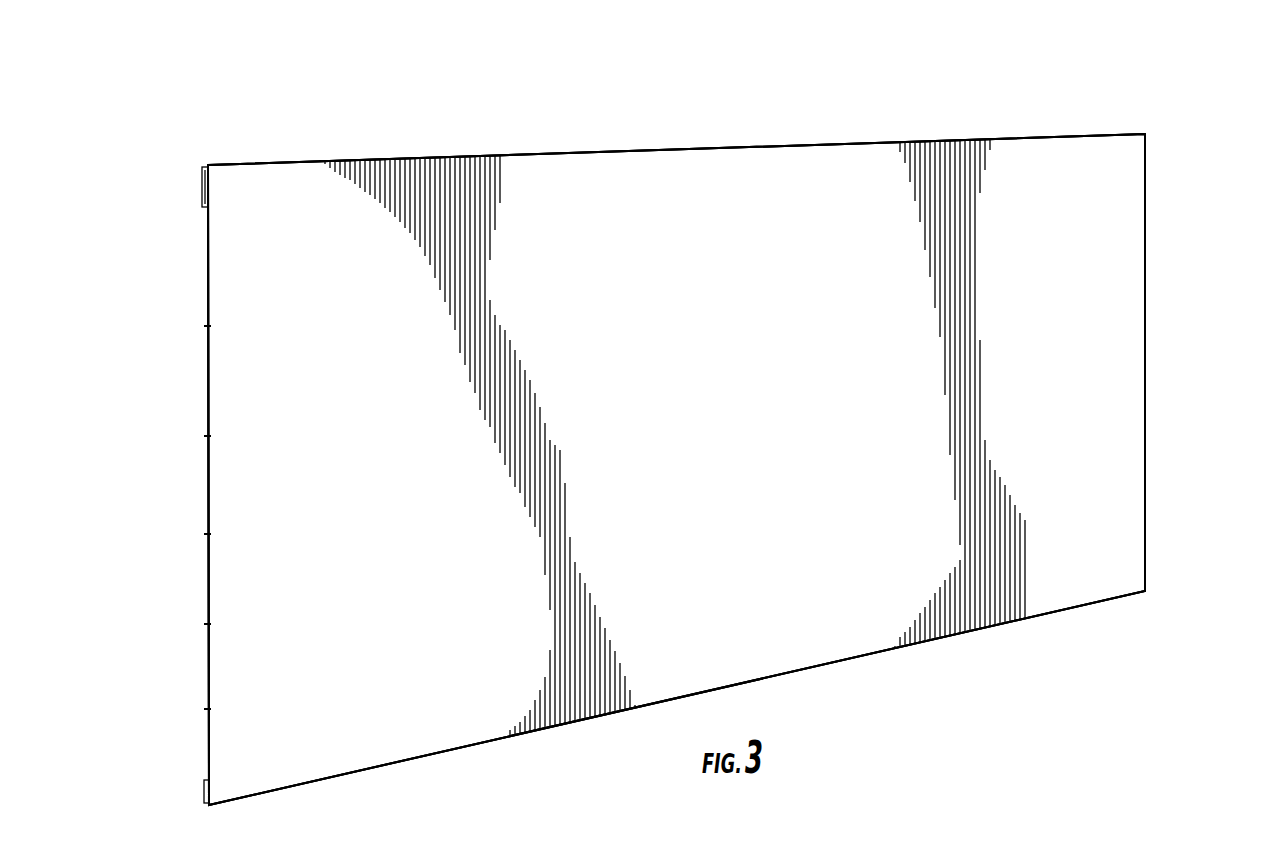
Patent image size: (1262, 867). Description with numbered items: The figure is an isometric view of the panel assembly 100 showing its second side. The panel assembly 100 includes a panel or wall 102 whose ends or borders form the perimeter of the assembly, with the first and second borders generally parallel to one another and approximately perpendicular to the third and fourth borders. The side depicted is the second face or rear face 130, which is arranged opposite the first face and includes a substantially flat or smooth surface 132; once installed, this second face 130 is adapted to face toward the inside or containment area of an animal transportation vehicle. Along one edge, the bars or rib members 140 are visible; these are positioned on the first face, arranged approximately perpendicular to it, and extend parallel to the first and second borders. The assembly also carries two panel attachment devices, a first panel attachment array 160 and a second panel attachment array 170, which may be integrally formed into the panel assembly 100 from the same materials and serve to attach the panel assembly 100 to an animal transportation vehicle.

The panel assembly 100 is at (948, 132).
The panel 102 is at (1086, 457).
The second face 130 is at (1118, 318).
The smooth surface 132 is at (843, 613).
The bars 140 is at (207, 326).
The first panel attachment array 160 is at (202, 187).
The second panel attachment array 170 is at (207, 804).